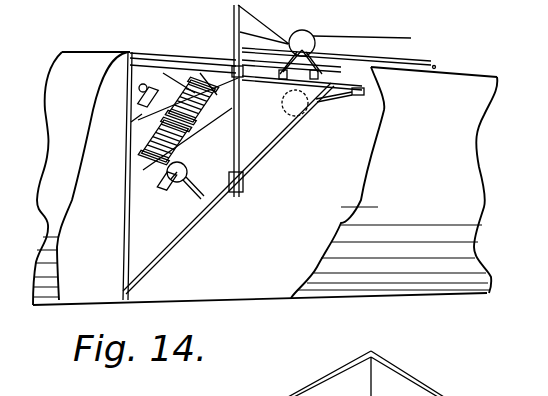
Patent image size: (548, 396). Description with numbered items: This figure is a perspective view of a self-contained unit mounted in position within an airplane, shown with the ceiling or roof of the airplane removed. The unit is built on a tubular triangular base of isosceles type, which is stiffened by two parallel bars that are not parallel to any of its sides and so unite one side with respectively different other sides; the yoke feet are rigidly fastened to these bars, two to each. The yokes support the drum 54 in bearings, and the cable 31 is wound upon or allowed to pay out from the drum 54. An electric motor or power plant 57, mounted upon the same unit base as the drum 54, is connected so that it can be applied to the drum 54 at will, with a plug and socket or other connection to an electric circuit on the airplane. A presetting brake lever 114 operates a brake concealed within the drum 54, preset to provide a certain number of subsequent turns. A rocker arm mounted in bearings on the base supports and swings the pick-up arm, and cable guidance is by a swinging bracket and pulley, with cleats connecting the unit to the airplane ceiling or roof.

The presetting brake lever 114 is at (148, 86).
The cable 31 is at (388, 38).
The drum 54 is at (152, 133).
The electric motor 57 is at (165, 179).